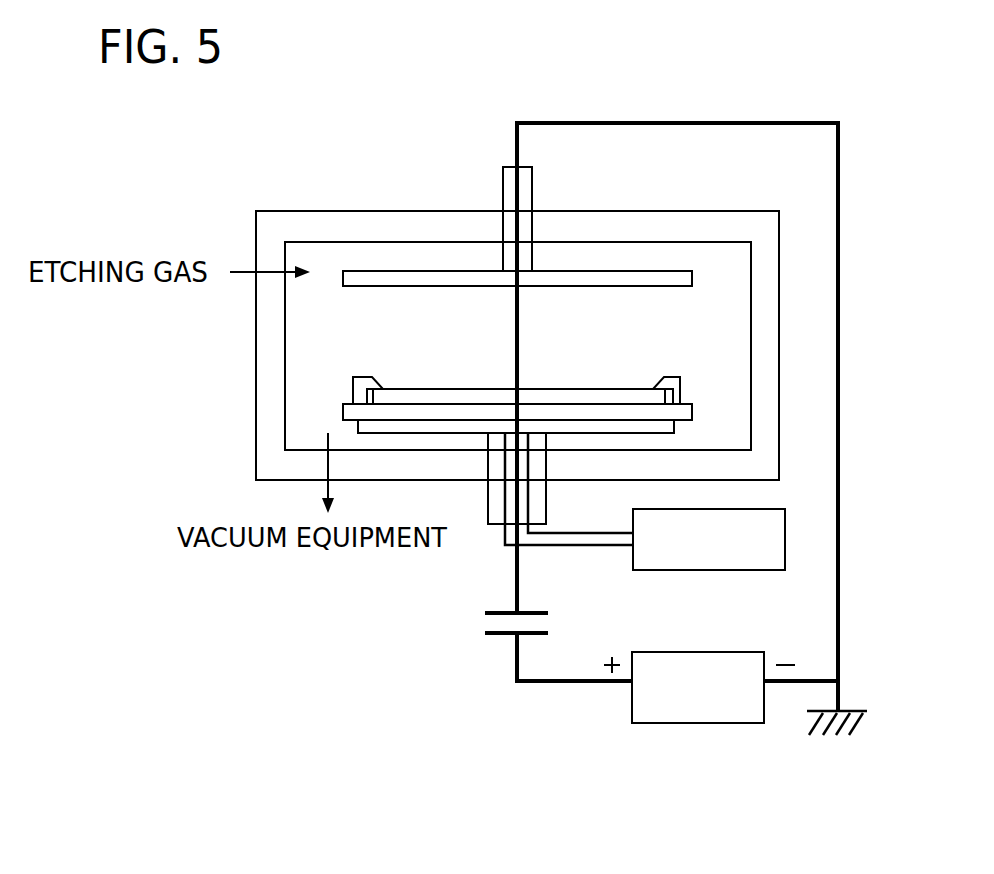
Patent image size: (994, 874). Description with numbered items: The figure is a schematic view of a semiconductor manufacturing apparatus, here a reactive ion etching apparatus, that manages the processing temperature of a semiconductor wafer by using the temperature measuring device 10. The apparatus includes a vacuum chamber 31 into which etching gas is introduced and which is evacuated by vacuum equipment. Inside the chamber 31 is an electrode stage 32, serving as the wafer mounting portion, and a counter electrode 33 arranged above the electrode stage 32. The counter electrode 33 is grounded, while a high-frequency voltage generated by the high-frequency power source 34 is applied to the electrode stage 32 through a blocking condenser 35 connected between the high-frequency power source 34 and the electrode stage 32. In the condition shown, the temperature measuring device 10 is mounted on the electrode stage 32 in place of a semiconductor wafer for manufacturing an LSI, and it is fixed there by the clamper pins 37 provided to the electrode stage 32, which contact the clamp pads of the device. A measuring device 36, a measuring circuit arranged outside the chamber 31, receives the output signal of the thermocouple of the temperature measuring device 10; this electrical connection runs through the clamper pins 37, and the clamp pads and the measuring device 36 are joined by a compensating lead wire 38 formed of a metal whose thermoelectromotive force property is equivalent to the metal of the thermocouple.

The temperature measuring device 10 is at (565, 389).
The vacuum chamber 31 is at (366, 222).
The electrode stage 32 is at (692, 411).
The counter electrode 33 is at (458, 286).
The high-frequency power source 34 is at (677, 723).
The blocking condenser 35 is at (470, 622).
The measuring device 36 is at (716, 570).
The clamper pin 37 is at (365, 380).
The compensating lead wire 38 is at (573, 548).